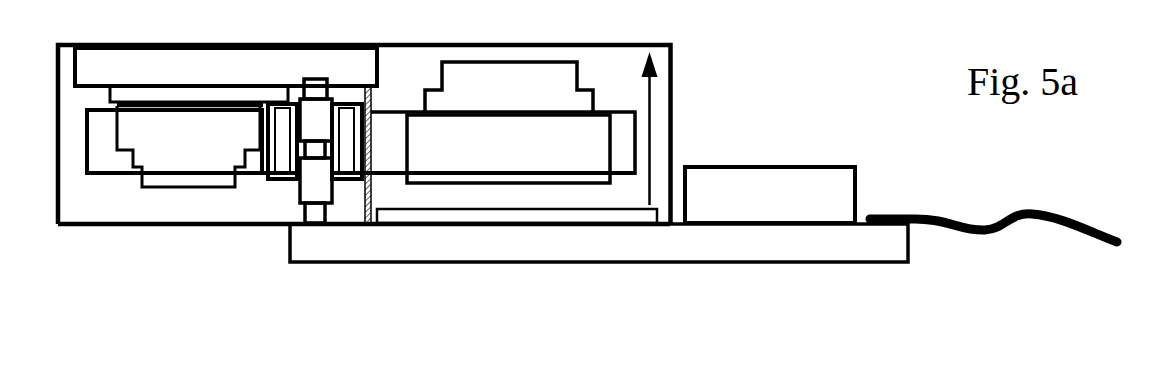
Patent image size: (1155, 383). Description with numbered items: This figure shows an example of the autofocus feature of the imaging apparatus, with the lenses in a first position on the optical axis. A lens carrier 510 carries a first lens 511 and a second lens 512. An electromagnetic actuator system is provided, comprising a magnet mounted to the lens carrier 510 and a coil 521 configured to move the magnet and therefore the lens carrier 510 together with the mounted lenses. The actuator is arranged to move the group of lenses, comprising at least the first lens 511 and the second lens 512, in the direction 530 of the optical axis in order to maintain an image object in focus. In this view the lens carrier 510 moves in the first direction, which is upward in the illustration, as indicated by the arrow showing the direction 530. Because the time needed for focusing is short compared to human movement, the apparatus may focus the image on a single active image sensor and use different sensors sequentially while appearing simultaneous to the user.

The lens carrier 510 is at (620, 135).
The first lens 511 is at (553, 160).
The second lens 512 is at (168, 156).
The coil 521 is at (322, 188).
The direction of the optical axis 530 is at (652, 173).